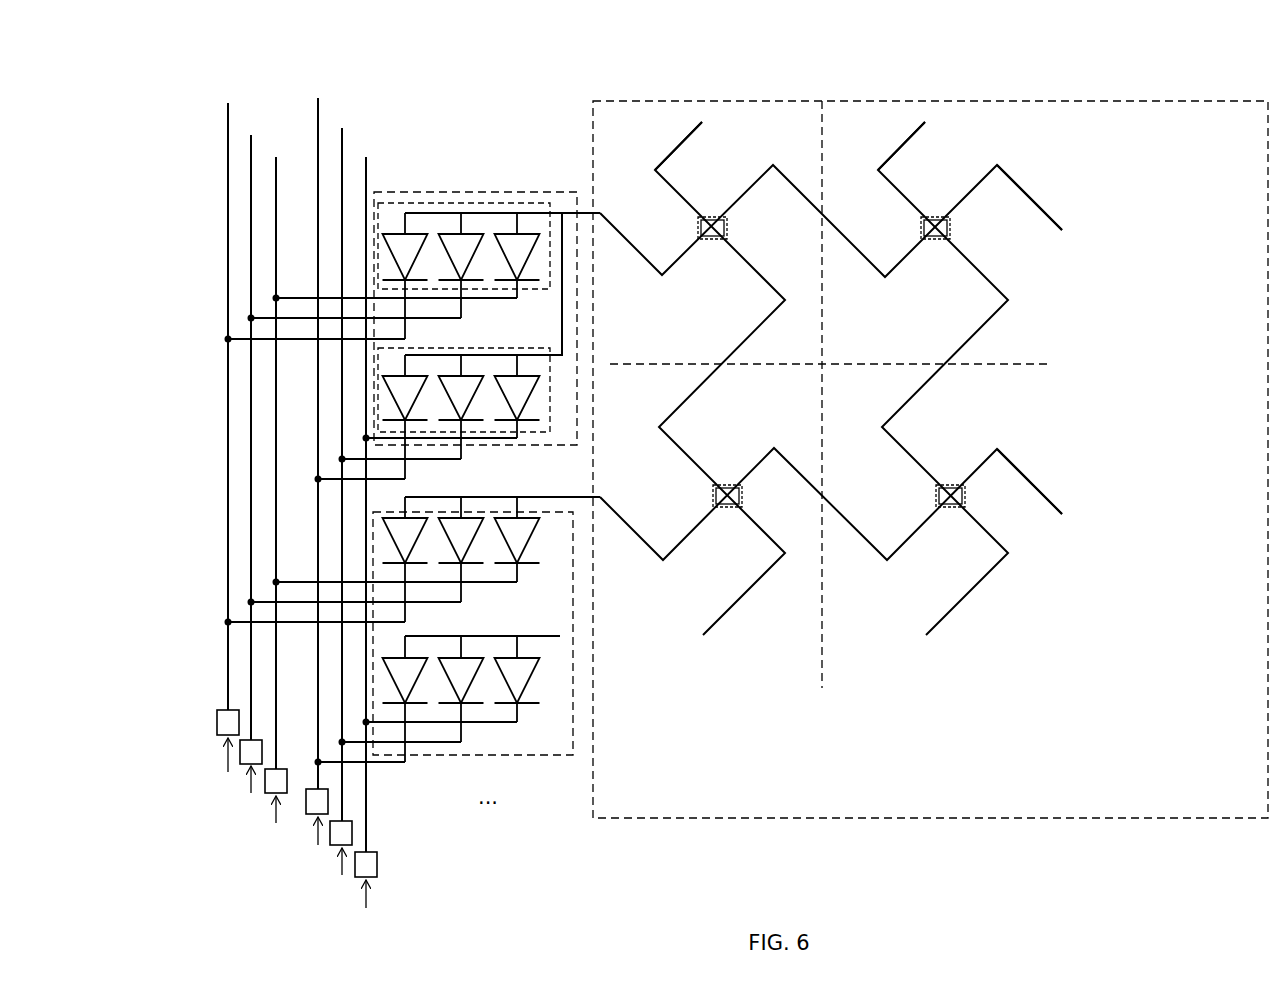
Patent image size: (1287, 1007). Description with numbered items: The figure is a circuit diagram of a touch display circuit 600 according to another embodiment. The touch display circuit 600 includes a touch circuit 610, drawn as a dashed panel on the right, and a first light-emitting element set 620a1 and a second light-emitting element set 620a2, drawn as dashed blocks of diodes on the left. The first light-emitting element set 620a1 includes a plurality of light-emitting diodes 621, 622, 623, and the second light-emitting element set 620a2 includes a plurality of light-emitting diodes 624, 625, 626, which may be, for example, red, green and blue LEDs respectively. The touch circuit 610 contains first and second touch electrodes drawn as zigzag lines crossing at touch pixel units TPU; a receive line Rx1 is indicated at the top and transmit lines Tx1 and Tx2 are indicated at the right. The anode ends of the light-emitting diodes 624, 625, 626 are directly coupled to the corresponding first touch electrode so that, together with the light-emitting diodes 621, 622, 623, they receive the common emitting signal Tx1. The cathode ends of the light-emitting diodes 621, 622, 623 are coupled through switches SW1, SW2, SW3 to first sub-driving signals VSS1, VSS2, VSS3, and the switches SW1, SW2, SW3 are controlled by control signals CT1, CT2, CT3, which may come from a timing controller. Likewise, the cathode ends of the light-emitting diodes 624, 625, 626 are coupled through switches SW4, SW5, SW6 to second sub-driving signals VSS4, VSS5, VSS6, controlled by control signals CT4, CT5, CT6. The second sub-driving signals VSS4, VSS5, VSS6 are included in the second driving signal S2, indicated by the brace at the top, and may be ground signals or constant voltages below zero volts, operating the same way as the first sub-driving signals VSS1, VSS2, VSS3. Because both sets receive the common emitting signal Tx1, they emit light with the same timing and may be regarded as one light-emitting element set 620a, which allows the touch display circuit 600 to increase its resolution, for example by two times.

The touch display circuit 600 is at (1237, 929).
The touch circuit 610 is at (1152, 101).
The light-emitting element set 620a is at (548, 192).
The first light-emitting element set 620a1 is at (535, 432).
The second light-emitting element set 620a2 is at (428, 203).
The light-emitting diode 621 is at (412, 372).
The light-emitting diode 622 is at (472, 372).
The light-emitting diode 623 is at (528, 372).
The light-emitting diode 624 is at (383, 233).
The light-emitting diode 625 is at (447, 232).
The light-emitting diode 626 is at (512, 232).
The touch pixel unit TPU is at (698, 223).
The receive line Rx1 is at (707, 97).
The common emitting signal Tx1 is at (1086, 221).
The second transmit line Tx2 is at (1086, 507).
The second driving signal S2 is at (205, 66).
The first sub-driving signal VSS1 is at (315, 431).
The first sub-driving signal VSS2 is at (353, 463).
The first sub-driving signal VSS3 is at (382, 492).
The second sub-driving signal VSS4 is at (233, 391).
The second sub-driving signal VSS5 is at (263, 423).
The second sub-driving signal VSS6 is at (288, 451).
The switch SW1 is at (328, 798).
The switch SW2 is at (352, 832).
The switch SW3 is at (377, 866).
The switch SW4 is at (217, 724).
The switch SW5 is at (240, 756).
The switch SW6 is at (265, 779).
The control signal CT1 is at (313, 847).
The control signal CT2 is at (338, 879).
The control signal CT3 is at (362, 910).
The control signal CT4 is at (223, 769).
The control signal CT5 is at (248, 796).
The control signal CT6 is at (272, 825).